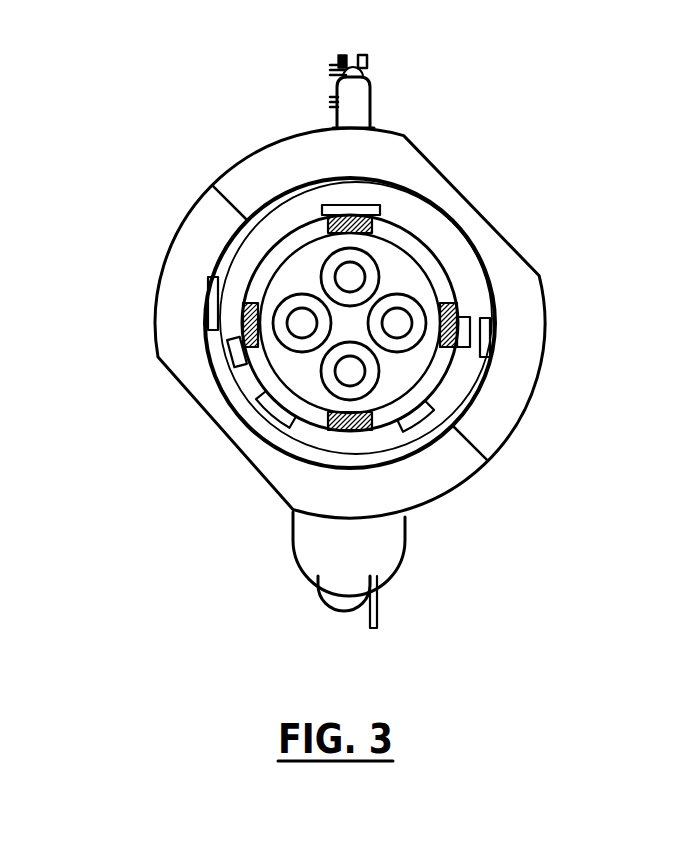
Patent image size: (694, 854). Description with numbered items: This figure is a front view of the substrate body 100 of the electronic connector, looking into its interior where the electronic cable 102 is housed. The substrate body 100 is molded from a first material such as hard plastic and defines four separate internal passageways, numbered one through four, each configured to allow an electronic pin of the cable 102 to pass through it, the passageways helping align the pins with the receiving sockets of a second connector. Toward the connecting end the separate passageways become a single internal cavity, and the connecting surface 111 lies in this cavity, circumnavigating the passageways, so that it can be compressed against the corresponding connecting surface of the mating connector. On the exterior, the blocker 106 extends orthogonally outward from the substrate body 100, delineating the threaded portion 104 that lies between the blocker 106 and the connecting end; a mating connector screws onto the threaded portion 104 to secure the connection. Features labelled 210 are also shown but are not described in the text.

The substrate body 100 is at (478, 585).
The electronic cable 102 is at (460, 328).
The threaded portion 104 is at (455, 387).
The blocker 106 is at (547, 333).
The connecting surface 111 is at (415, 245).
The latch tabs 210 is at (343, 197).